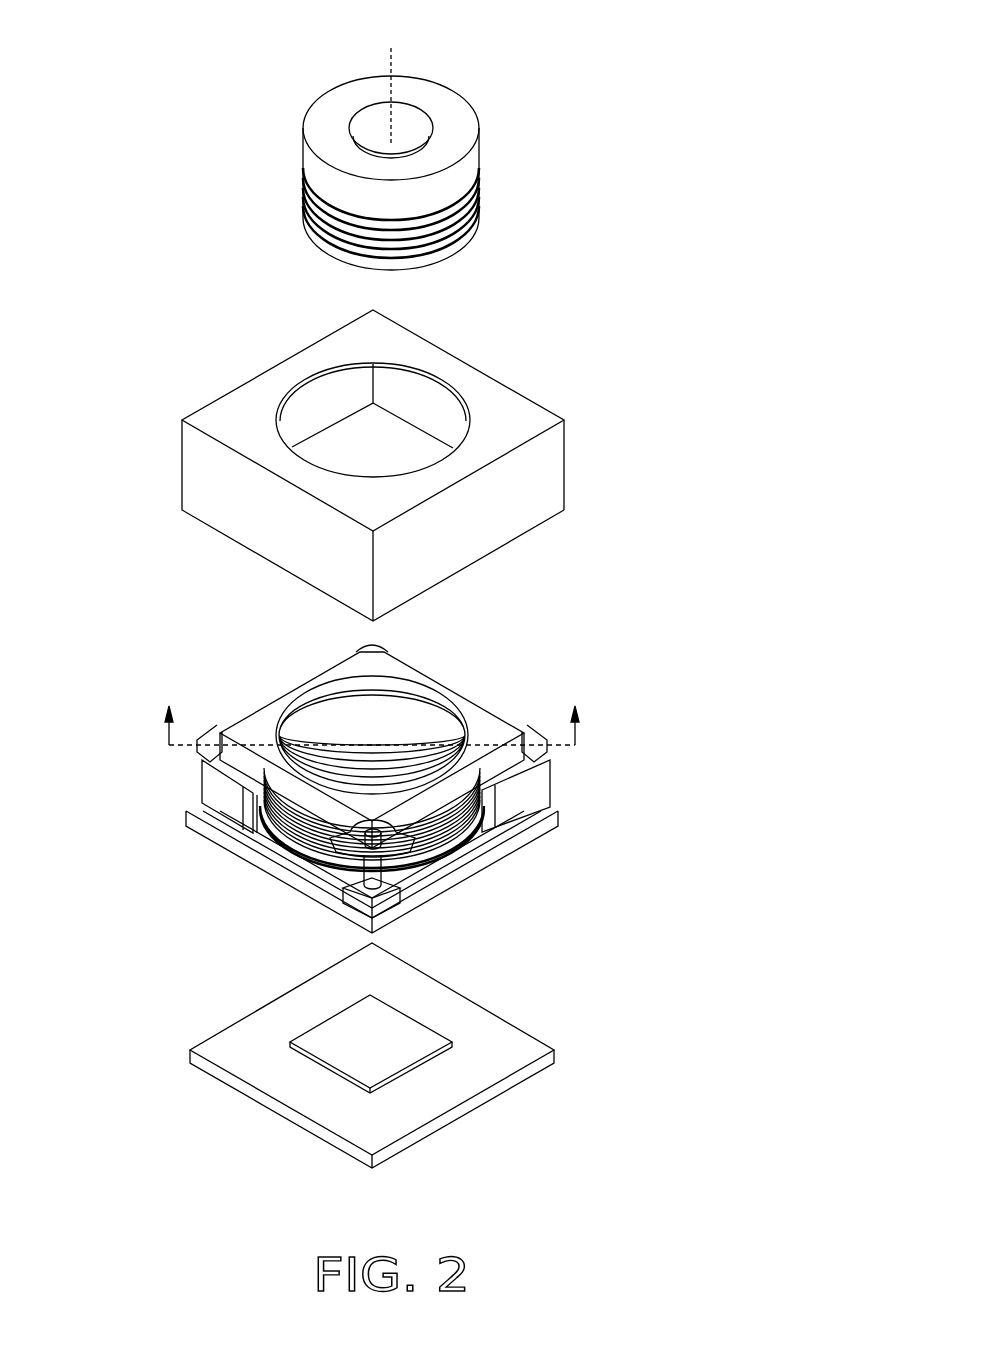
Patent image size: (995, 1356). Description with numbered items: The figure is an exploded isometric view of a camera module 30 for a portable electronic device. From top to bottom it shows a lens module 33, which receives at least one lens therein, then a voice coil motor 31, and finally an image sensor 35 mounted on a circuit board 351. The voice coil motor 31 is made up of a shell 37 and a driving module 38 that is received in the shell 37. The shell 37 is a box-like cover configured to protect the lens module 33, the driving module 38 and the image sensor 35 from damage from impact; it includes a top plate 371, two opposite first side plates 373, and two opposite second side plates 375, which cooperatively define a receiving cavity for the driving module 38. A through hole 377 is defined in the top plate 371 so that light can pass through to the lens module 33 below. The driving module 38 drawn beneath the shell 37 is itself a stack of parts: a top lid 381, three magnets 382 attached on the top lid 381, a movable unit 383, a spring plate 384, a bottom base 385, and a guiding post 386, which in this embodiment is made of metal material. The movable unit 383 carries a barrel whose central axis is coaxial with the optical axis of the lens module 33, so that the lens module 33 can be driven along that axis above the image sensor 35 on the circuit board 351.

The camera module 30 is at (217, 40).
The lens module 33 is at (462, 177).
The voice coil motor 31 is at (745, 378).
The shell 37 is at (660, 320).
The top plate 371 is at (512, 420).
The first side plates 373 is at (490, 372).
The second side plates 375 is at (520, 490).
The through hole 377 is at (323, 400).
The driving module 38 is at (660, 673).
The top lid 381 is at (480, 730).
The magnets 382 is at (535, 795).
The movable unit 383 is at (502, 845).
The spring plate 384 is at (465, 863).
The bottom base 385 is at (442, 880).
The guiding post 386 is at (373, 880).
The image sensor 35 is at (348, 1042).
The circuit board 351 is at (547, 1060).